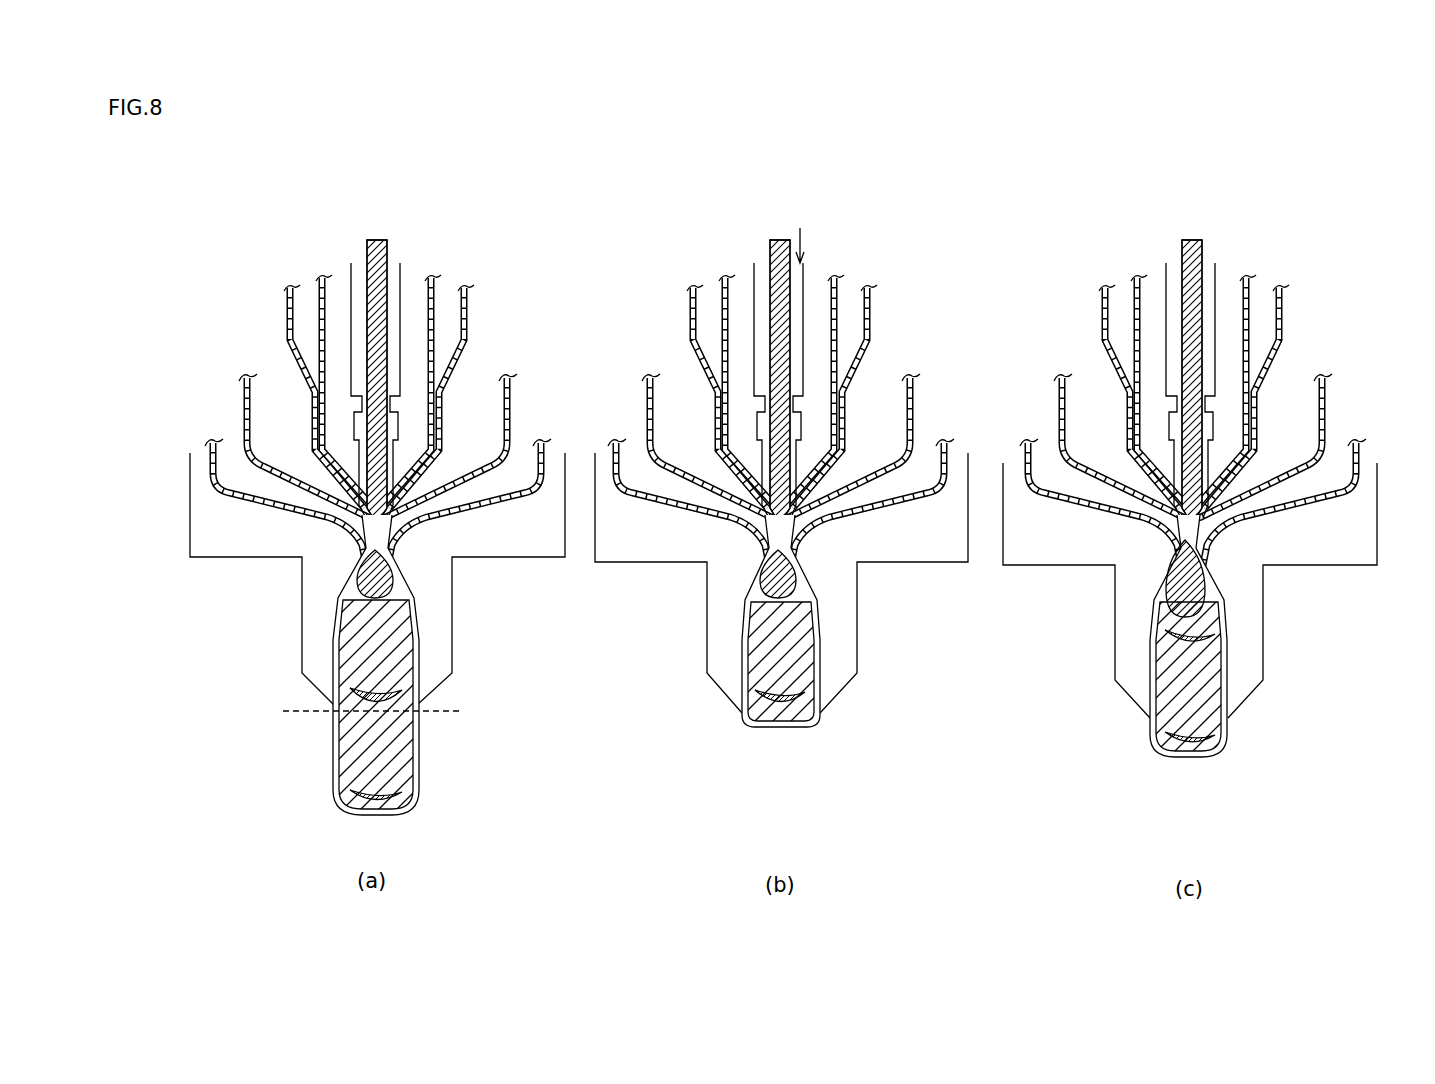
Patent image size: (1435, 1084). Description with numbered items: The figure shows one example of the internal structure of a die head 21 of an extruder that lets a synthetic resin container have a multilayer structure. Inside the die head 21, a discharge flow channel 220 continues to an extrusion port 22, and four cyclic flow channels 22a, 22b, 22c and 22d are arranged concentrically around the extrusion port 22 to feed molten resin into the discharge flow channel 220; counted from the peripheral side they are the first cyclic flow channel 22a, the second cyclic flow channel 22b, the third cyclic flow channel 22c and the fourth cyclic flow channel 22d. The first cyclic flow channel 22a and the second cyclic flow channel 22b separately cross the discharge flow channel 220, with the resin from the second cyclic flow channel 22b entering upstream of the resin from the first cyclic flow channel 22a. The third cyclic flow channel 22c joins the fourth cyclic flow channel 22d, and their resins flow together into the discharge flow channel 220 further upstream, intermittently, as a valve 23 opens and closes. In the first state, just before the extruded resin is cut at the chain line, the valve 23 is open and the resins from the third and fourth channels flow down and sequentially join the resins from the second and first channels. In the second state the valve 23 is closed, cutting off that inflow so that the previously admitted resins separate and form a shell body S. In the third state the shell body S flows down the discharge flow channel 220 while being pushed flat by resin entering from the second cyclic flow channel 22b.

The die head 21 is at (213, 532).
The extrusion port 22 is at (715, 665).
The discharge flow channel 220 is at (333, 630).
The first cyclic flow channel 22a is at (250, 505).
The second cyclic flow channel 22b is at (482, 483).
The third cyclic flow channel 22c is at (292, 352).
The fourth cyclic flow channel 22d is at (320, 280).
The valve 23 is at (390, 260).
The shell body S is at (404, 688).